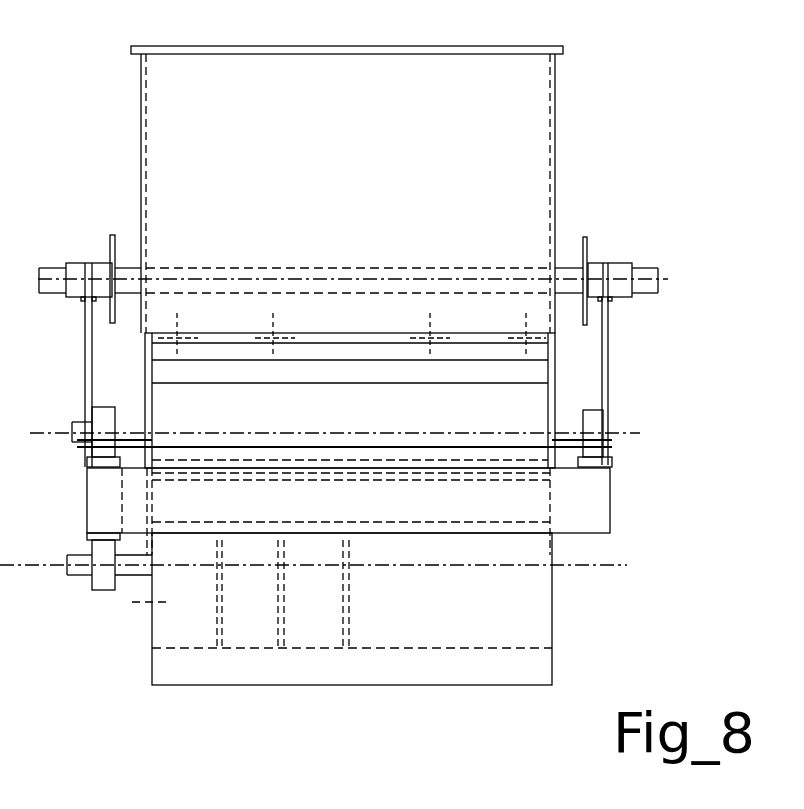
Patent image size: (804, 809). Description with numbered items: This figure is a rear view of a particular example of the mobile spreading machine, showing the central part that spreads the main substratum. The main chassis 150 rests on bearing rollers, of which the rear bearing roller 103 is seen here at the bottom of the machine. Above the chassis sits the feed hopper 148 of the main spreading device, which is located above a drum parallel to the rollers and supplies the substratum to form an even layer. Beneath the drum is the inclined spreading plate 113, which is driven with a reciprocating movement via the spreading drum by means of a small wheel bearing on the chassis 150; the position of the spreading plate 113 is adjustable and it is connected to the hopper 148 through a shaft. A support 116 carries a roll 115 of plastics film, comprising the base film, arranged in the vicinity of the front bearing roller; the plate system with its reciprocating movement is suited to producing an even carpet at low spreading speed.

The feed hopper 148 is at (523, 120).
The roll of plastics film 115 is at (587, 250).
The support 116 is at (608, 357).
The main chassis 150 is at (597, 508).
The inclined spreading plate 113 is at (517, 617).
The rear bearing roller 103 is at (532, 672).